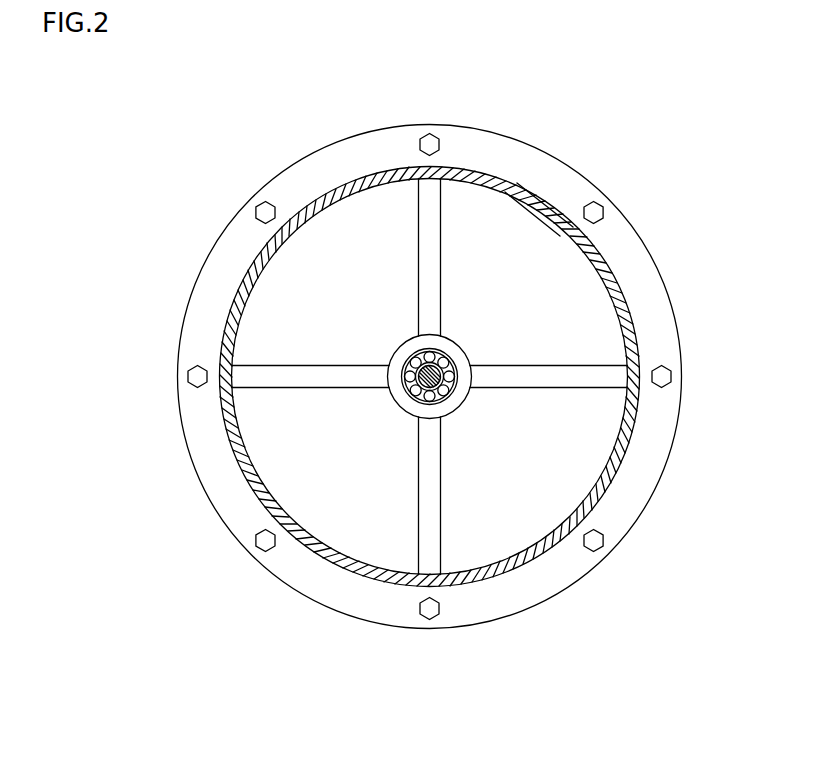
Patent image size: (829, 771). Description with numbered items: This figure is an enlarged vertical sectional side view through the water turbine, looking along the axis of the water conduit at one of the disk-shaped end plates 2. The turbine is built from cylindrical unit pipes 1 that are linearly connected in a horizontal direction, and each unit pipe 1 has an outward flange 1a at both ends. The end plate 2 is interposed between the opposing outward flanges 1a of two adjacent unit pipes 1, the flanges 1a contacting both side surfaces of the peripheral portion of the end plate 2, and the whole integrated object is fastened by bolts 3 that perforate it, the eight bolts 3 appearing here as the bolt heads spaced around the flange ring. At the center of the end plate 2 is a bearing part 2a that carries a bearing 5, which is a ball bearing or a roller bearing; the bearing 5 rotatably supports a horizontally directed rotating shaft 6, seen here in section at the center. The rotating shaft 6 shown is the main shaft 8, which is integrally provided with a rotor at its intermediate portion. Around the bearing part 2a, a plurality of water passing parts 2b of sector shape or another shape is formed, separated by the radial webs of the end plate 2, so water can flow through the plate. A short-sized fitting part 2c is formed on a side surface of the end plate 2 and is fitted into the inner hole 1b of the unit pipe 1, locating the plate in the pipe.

The unit pipe 1 is at (462, 345).
The outward flange 1a is at (633, 223).
The inner hole 1b is at (616, 288).
The disk-shaped end plate 2 is at (425, 379).
The bearing part 2a is at (398, 352).
The water passing part 2b is at (464, 203).
The fitting part 2c is at (221, 381).
The bolt 3 is at (262, 202).
The bearing 5 is at (442, 405).
The rotating shaft 6 is at (473, 338).
The main shaft 8 is at (452, 364).